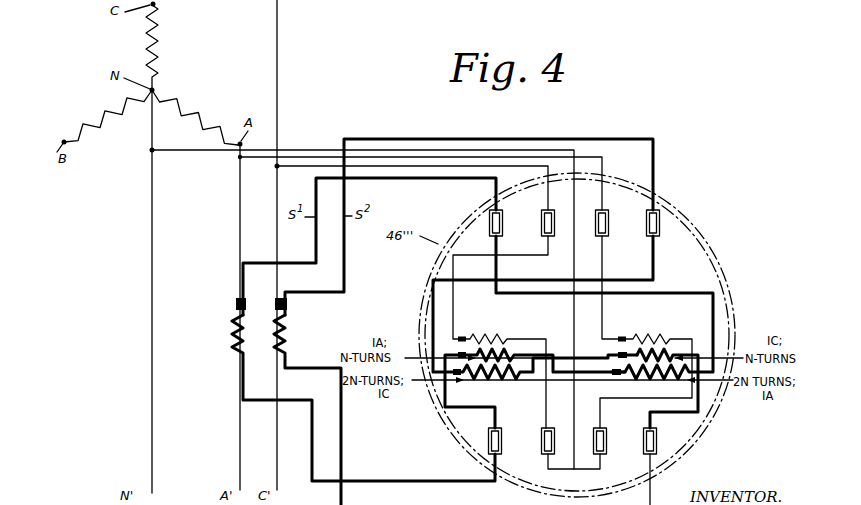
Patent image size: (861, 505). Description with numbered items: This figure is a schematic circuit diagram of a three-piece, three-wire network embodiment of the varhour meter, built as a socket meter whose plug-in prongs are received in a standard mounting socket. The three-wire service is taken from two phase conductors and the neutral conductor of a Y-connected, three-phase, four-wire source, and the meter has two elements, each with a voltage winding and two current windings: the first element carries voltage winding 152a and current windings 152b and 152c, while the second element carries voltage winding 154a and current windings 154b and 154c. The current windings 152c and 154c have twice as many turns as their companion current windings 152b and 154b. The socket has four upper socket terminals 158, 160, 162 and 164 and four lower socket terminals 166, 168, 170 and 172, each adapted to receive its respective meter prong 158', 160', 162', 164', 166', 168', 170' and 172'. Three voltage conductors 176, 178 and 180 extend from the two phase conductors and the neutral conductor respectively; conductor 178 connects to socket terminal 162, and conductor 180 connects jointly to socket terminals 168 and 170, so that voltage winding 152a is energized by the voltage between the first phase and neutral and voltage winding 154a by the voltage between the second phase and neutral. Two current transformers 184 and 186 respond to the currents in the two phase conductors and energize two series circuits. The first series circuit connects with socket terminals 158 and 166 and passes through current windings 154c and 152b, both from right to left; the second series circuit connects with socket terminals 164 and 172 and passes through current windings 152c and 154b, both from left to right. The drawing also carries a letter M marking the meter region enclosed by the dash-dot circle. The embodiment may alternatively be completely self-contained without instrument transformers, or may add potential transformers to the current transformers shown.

The voltage winding 152a is at (496, 336).
The current winding 152b is at (503, 353).
The current winding 152c is at (492, 381).
The voltage winding 154a is at (663, 336).
The current winding 154b is at (661, 353).
The current winding 154c is at (655, 381).
The upper socket terminal 158 is at (471, 218).
The meter prong 158' is at (481, 230).
The upper socket terminal 160 is at (533, 215).
The meter prong 160' is at (532, 230).
The upper socket terminal 162 is at (618, 215).
The meter prong 162' is at (620, 231).
The upper socket terminal 164 is at (686, 214).
The meter prong 164' is at (682, 234).
The lower socket terminal 166 is at (466, 447).
The meter prong 166' is at (477, 430).
The lower socket terminal 168 is at (533, 446).
The meter prong 168' is at (532, 430).
The lower socket terminal 170 is at (615, 449).
The meter prong 170' is at (618, 430).
The lower socket terminal 172 is at (686, 452).
The meter prong 172' is at (689, 442).
The voltage conductor 176 is at (296, 165).
The voltage conductor 178 is at (296, 168).
The voltage conductor 180 is at (331, 150).
The current transformer 184 is at (236, 331).
The current transformer 186 is at (285, 335).
The meter M is at (435, 266).